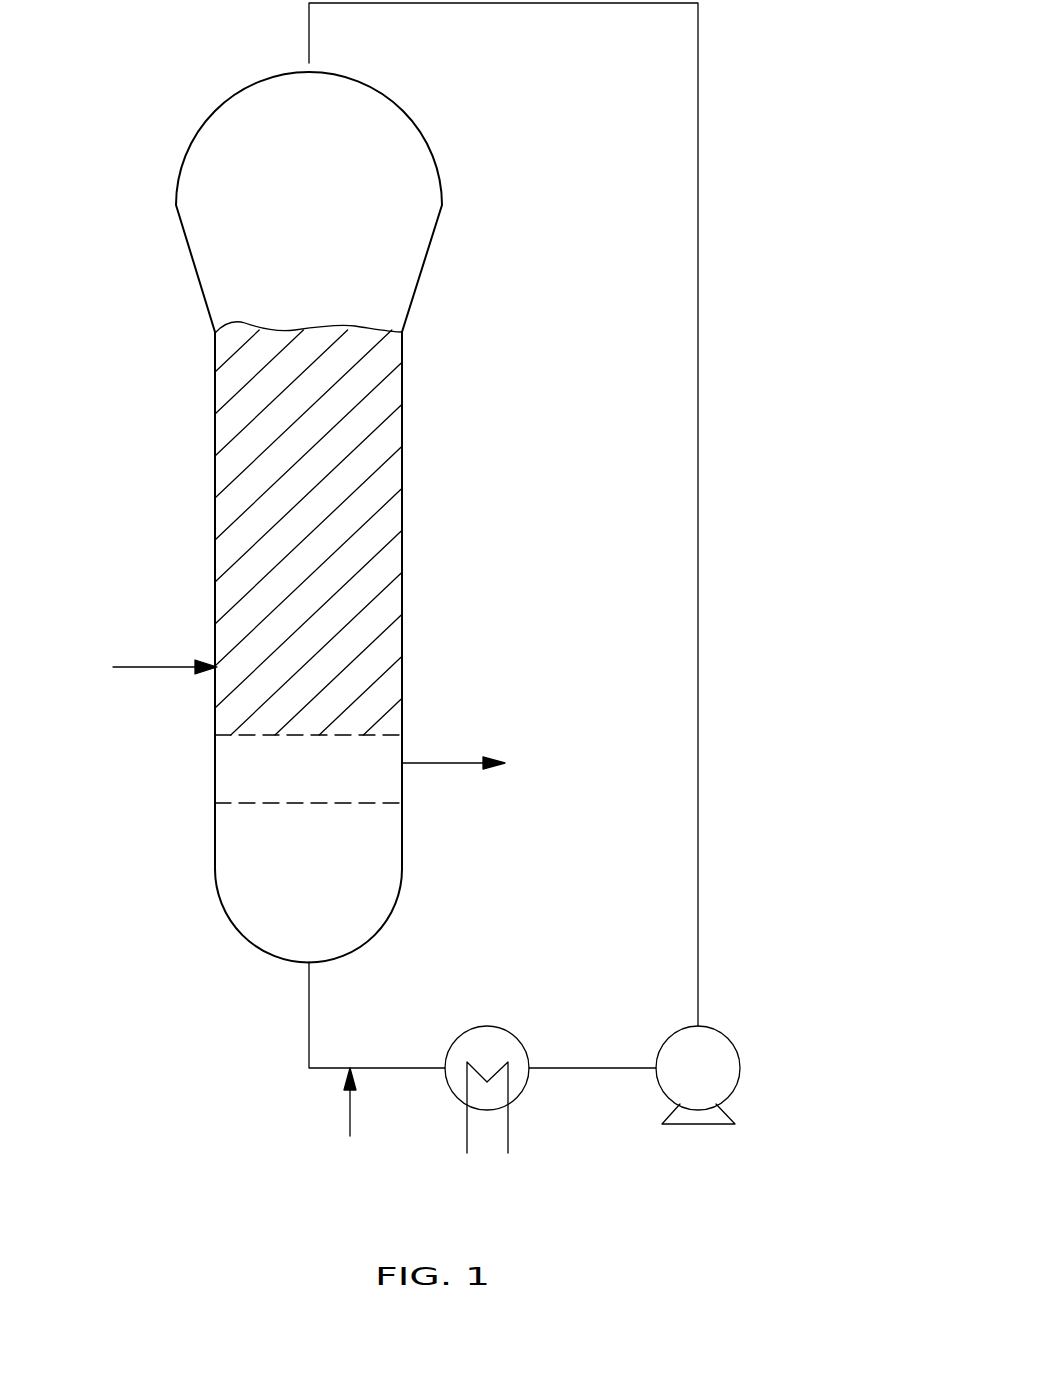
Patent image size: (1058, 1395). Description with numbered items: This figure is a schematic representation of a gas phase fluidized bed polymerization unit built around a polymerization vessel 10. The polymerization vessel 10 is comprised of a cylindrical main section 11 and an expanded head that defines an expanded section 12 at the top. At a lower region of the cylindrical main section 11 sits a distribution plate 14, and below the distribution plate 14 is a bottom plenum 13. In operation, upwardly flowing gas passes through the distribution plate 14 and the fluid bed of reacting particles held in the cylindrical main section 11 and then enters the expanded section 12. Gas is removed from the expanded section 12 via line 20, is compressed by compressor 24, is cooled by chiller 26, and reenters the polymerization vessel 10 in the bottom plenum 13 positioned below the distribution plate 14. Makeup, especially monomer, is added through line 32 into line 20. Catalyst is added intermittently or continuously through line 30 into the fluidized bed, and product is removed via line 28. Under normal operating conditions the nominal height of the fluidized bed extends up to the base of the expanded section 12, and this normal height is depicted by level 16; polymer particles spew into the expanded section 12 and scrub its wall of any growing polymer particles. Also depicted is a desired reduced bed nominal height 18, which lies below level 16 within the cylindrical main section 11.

The polymerization vessel 10 is at (290, 492).
The cylindrical main section 11 is at (402, 507).
The expanded section 12 is at (192, 167).
The bottom plenum 13 is at (232, 925).
The distribution plate 14 is at (280, 805).
The level 16 is at (312, 331).
The reduced bed nominal height 18 is at (317, 735).
The line 20 is at (698, 155).
The compressor 24 is at (727, 1042).
The chiller 26 is at (502, 1028).
The line 28 is at (452, 763).
The line 30 is at (132, 667).
The line 32 is at (350, 1123).